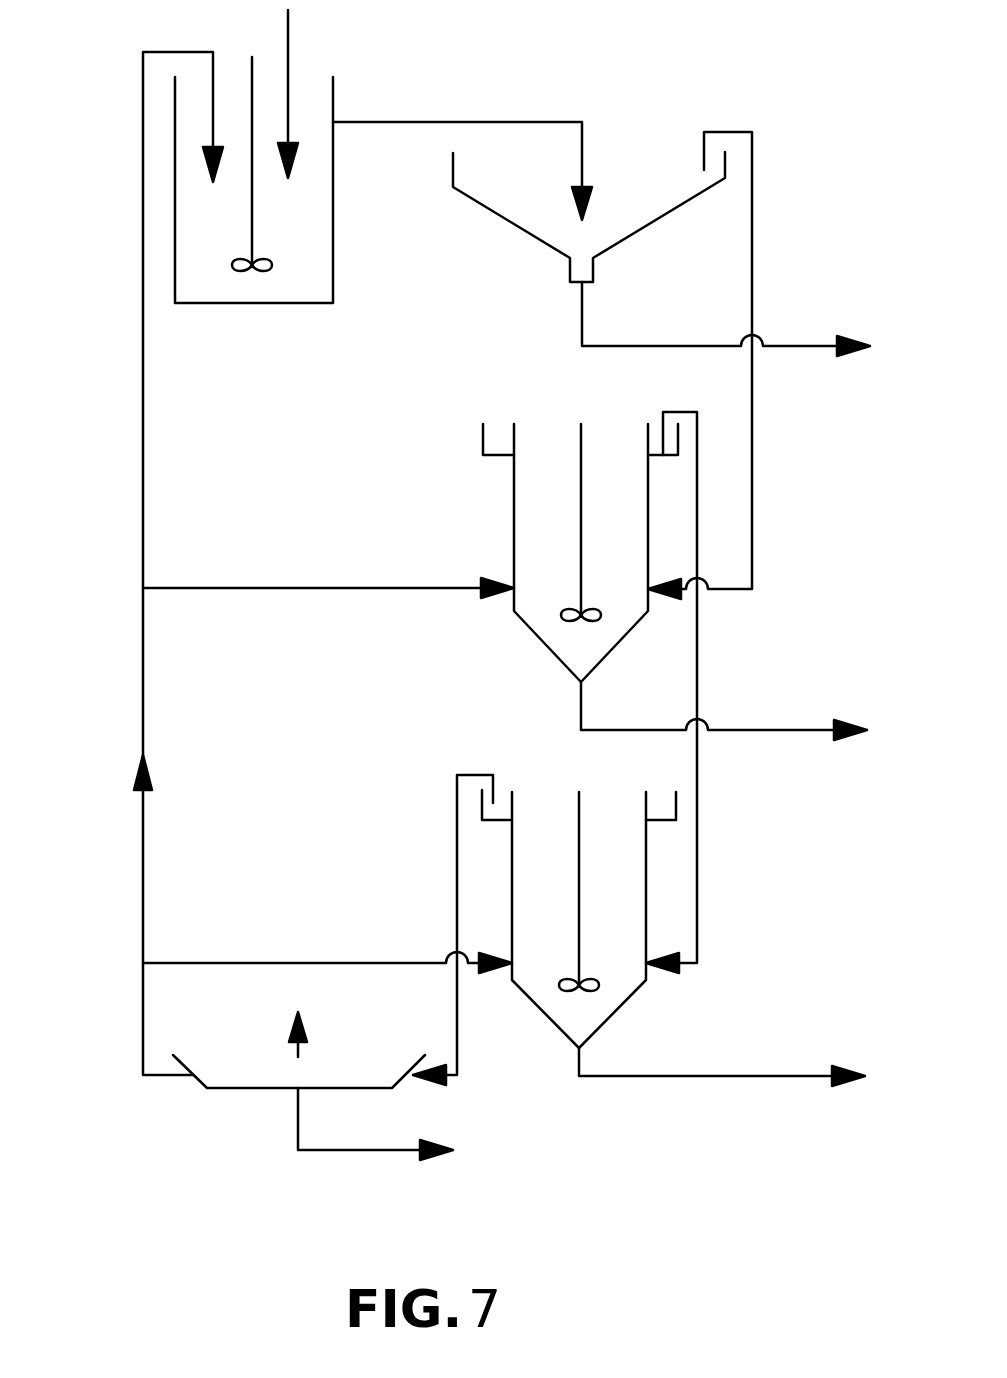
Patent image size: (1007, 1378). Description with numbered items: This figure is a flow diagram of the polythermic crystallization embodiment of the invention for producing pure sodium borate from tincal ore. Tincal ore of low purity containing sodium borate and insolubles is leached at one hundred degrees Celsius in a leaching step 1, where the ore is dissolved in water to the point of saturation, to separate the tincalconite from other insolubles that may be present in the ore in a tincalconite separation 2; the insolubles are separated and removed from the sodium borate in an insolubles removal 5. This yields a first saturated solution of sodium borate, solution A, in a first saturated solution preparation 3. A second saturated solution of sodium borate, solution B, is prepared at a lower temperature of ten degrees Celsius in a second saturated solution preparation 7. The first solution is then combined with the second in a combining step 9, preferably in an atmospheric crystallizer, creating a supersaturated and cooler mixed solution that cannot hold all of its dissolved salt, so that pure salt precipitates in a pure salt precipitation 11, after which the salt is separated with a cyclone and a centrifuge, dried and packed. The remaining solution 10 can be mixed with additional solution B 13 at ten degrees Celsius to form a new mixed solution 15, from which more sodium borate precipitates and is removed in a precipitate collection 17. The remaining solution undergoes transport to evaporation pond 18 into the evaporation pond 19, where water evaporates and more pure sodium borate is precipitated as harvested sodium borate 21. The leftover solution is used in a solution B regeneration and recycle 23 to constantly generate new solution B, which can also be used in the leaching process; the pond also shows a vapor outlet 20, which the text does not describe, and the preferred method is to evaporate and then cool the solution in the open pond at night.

The leaching step 1 is at (293, 70).
The tincalconite separation 2 is at (587, 158).
The first saturated solution preparation 3 is at (755, 233).
The insolubles removal 5 is at (793, 338).
The second saturated solution preparation 7 is at (354, 578).
The combining step 9 is at (585, 504).
The remaining solution 10 is at (700, 660).
The pure salt precipitation 11 is at (787, 735).
The additional solution B 13 is at (249, 958).
The new mixed solution 15 is at (584, 884).
The precipitate collection 17 is at (699, 1070).
The transport to evaporation pond 18 is at (452, 873).
The evaporation pond 19 is at (235, 1092).
The vapor outlet 20 is at (312, 1047).
The harvested sodium borate 21 is at (358, 1157).
The solution B regeneration and recycle 23 is at (136, 852).